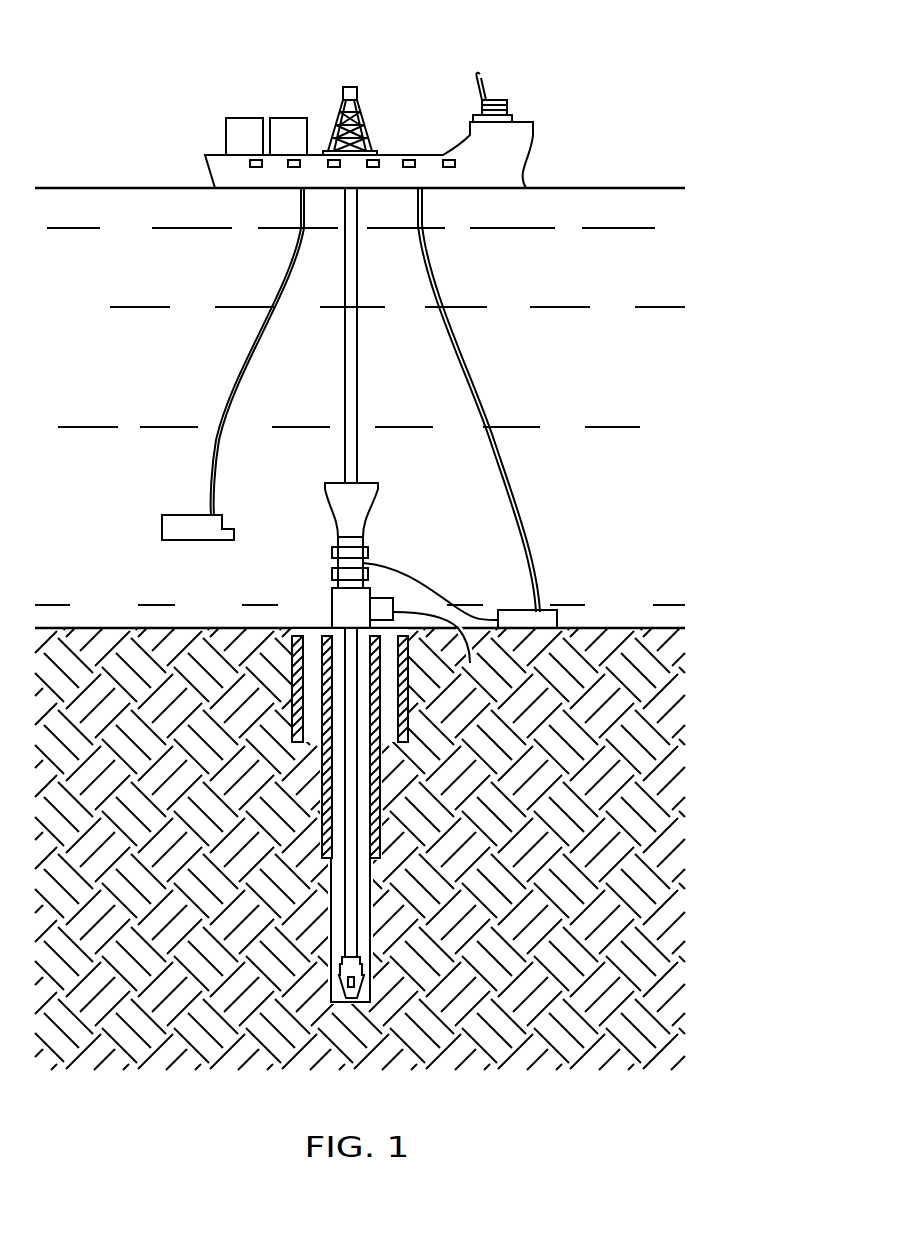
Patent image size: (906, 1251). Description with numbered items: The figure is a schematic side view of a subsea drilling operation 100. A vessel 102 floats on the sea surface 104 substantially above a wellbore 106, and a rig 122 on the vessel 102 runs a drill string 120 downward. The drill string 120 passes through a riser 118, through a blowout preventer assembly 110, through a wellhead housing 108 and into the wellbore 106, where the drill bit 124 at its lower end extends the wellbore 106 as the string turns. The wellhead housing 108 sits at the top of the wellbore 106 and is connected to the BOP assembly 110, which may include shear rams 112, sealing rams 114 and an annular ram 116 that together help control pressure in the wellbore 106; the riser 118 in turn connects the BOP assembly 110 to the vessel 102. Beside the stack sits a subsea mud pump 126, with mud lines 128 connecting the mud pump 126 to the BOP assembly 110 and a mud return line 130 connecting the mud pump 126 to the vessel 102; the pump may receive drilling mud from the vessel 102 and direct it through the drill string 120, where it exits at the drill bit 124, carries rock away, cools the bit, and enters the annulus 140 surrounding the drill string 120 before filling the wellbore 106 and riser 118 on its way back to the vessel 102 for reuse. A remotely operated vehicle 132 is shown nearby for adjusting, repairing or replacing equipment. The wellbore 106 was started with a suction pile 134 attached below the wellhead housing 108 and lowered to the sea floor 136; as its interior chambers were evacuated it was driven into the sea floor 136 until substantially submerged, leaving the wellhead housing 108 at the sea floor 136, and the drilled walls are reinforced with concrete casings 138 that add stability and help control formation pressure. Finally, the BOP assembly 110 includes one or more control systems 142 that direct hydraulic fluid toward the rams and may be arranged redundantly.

The subsea drilling operation 100 is at (489, 43).
The vessel 102 is at (533, 130).
The sea surface 104 is at (603, 187).
The wellbore 106 is at (322, 792).
The wellhead housing 108 is at (332, 605).
The blowout preventer (BOP) assembly 110 is at (342, 534).
The shear rams 112 is at (330, 552).
The sealing rams 114 is at (332, 575).
The annular ram 116 is at (326, 483).
The riser 118 is at (357, 363).
The drill string 120 is at (358, 896).
The rig 122 is at (350, 84).
The drill bit 124 is at (358, 989).
The mud pump 126 is at (548, 609).
The mud lines 128 is at (400, 562).
The mud return line 130 is at (470, 372).
The remotely operated vehicle (ROV) 132 is at (178, 513).
The suction pile 134 is at (292, 703).
The sea floor 136 is at (92, 627).
The concrete casings 138 is at (380, 786).
The annulus 140 is at (333, 924).
The control systems 142 is at (443, 654).